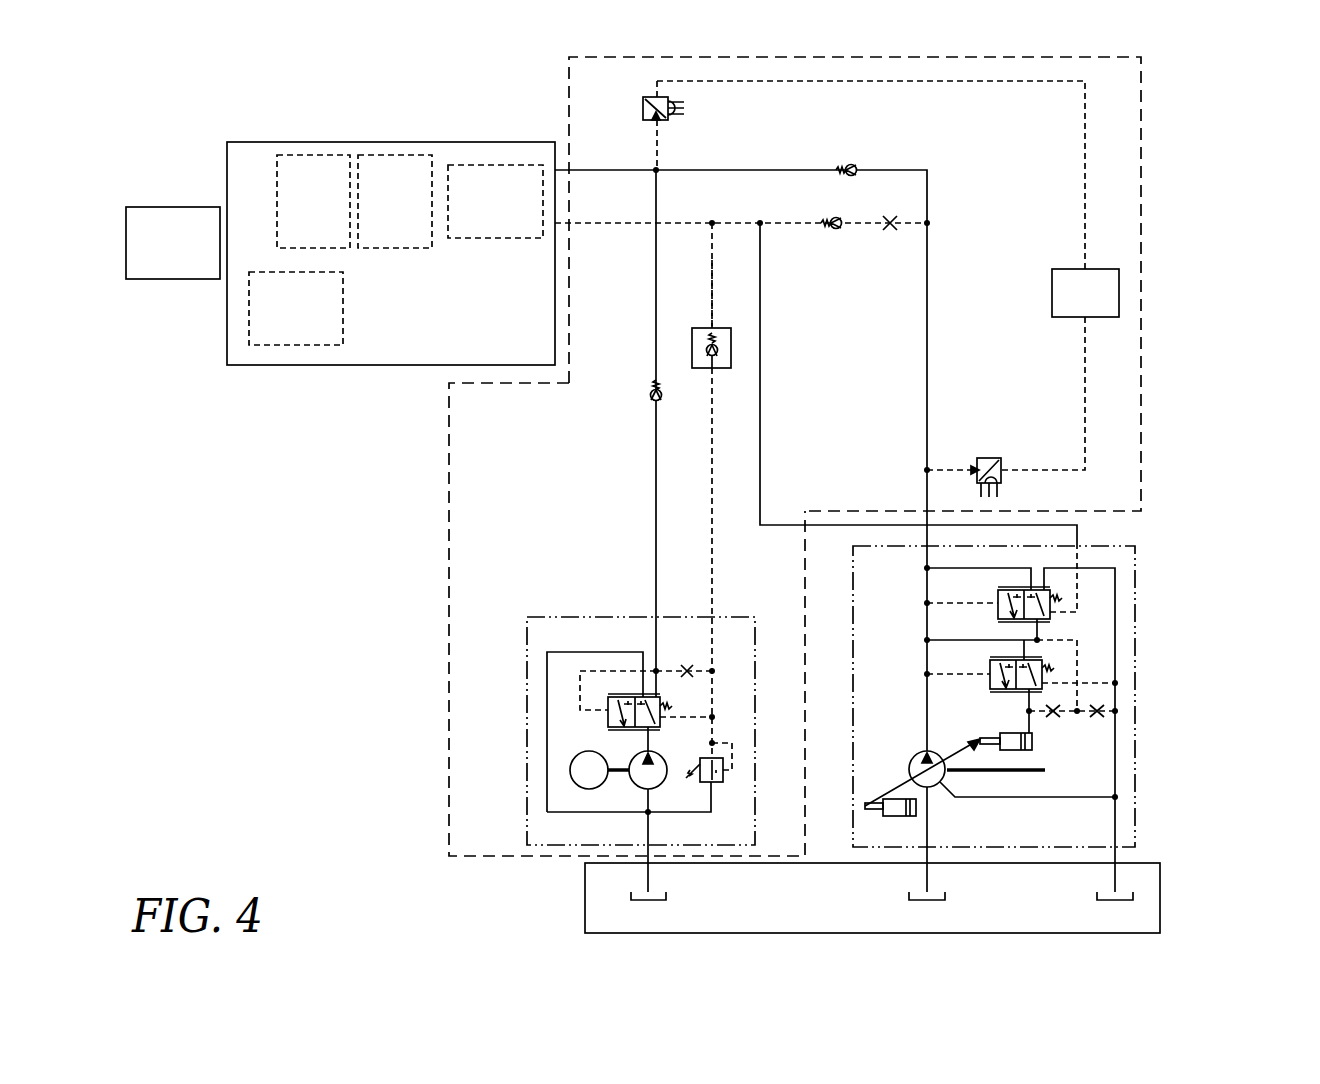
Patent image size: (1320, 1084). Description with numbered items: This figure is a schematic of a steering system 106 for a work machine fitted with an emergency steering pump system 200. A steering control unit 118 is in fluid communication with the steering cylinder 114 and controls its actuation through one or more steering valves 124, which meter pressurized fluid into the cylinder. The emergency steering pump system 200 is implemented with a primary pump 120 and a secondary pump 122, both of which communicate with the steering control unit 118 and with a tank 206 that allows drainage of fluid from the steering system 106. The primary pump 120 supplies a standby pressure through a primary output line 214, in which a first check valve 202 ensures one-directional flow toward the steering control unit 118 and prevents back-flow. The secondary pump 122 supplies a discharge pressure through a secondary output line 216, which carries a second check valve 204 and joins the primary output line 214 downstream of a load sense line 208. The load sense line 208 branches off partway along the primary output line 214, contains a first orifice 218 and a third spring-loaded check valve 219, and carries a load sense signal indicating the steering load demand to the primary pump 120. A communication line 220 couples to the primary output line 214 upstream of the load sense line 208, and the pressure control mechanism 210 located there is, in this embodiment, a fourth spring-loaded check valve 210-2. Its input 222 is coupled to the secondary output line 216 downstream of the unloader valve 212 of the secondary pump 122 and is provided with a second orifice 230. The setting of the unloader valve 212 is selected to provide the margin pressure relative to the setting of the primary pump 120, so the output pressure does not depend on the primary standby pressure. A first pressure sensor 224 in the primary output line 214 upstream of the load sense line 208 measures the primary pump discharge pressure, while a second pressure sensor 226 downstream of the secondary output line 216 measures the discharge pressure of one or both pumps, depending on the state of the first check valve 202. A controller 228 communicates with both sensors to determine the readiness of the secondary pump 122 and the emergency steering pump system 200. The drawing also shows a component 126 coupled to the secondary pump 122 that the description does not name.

The steering system 106 is at (272, 645).
The steering cylinder 114 is at (173, 243).
The steering control unit 118 is at (258, 142).
The primary pump 120 is at (912, 757).
The secondary pump 122 is at (665, 783).
The steering valves 124 is at (354, 201).
The electric motor 126 is at (576, 755).
The emergency steering pump system 200 is at (1142, 193).
The first check valve 202 is at (853, 164).
The second check valve 204 is at (650, 395).
The tank 206 is at (1161, 893).
The load sense line 208 is at (684, 223).
The pressure control mechanism 210 is at (723, 328).
The fourth spring-loaded check valve 210-2 is at (718, 350).
The unloader valve 212 is at (660, 697).
The primary output line 214 is at (685, 170).
The secondary output line 216 is at (656, 548).
The first orifice 218 is at (890, 236).
The third spring-loaded check valve 219 is at (832, 236).
The communication line 220 is at (712, 272).
The input of the pressure control mechanism 222 is at (712, 565).
The first pressure sensor 224 is at (992, 458).
The second pressure sensor 226 is at (643, 107).
The controller 228 is at (888, 275).
The second orifice 230 is at (687, 668).